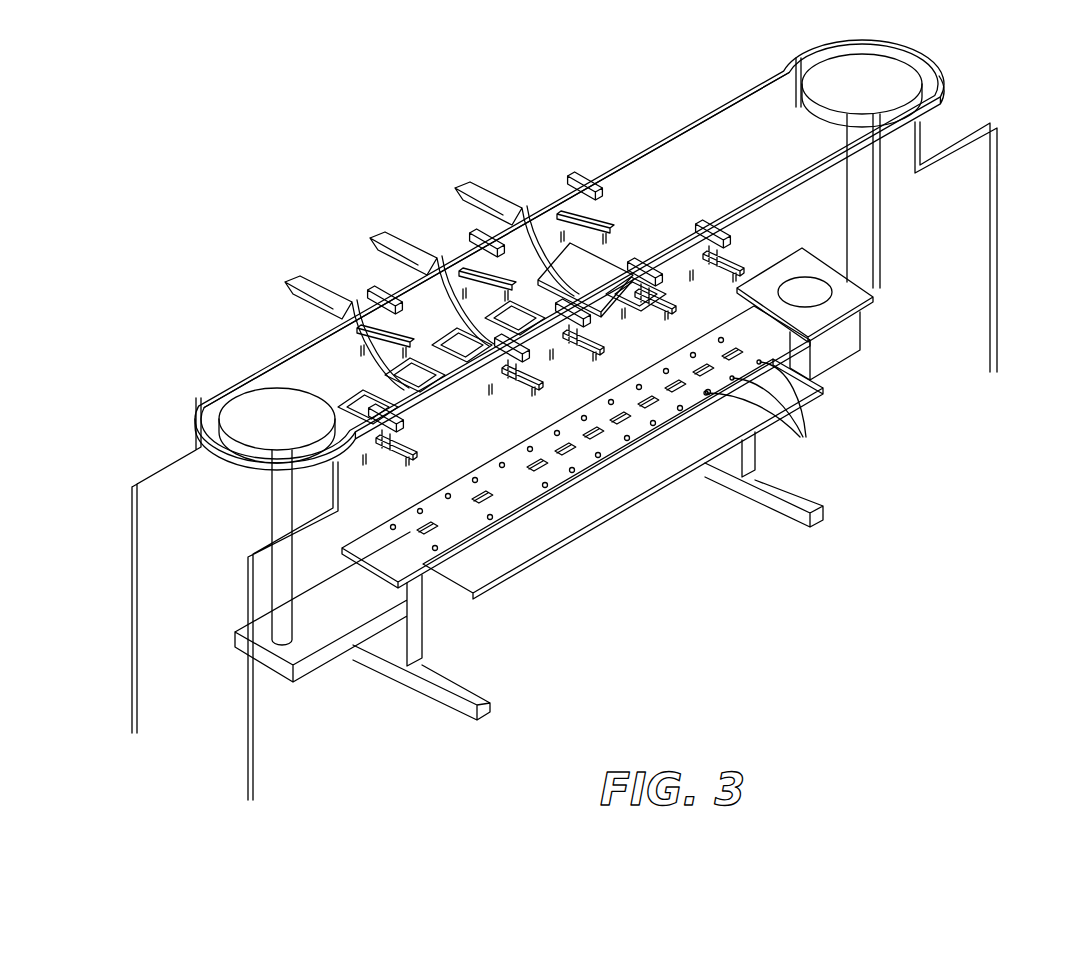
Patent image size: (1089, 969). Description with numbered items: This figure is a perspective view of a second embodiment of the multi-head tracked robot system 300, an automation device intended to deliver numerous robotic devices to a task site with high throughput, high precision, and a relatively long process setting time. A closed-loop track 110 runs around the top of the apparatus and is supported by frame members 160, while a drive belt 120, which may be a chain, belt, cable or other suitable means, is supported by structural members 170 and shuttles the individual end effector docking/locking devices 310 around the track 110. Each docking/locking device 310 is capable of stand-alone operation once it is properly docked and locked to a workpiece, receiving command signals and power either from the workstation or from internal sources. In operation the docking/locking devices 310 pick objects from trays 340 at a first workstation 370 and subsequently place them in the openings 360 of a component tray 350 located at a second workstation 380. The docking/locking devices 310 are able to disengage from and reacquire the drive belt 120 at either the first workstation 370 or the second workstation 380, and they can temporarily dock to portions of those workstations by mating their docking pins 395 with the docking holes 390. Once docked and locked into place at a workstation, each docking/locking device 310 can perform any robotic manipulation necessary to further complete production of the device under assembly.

The track 110 is at (937, 80).
The drive belt 120 is at (735, 113).
The frame members 160 is at (990, 250).
The structural members 170 is at (859, 220).
The multi-head tracked robot system 300 is at (230, 158).
The end effector docking/locking device 310 is at (603, 218).
The tray 340 is at (543, 268).
The component tray 350 is at (613, 447).
The openings 360 is at (447, 517).
The first workstation 370 is at (658, 217).
The second workstation 380 is at (609, 568).
The docking holes 390 is at (775, 406).
The docking pins 395 is at (394, 460).